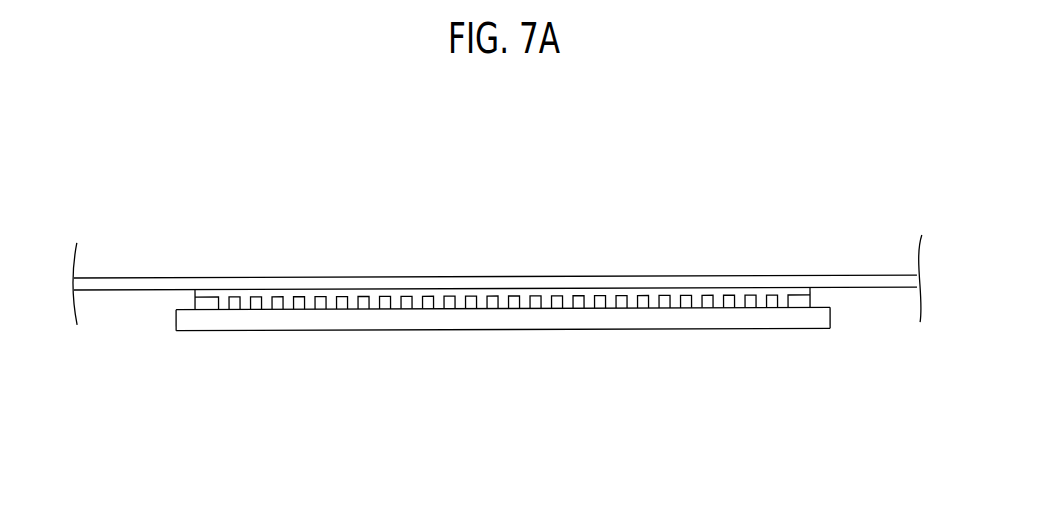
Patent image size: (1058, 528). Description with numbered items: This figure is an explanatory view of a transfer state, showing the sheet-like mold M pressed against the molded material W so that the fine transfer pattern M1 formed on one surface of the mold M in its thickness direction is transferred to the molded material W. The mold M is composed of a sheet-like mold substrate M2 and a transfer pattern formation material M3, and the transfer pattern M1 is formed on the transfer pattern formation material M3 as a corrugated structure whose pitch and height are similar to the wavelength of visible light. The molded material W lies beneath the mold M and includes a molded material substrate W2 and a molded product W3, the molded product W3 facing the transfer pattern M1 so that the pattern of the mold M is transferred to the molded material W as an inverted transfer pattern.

The sheet-like mold M is at (147, 279).
The transfer pattern M1 is at (537, 295).
The mold substrate M2 is at (333, 277).
The transfer pattern formation material M3 is at (410, 305).
The molded material W is at (275, 331).
The molded material substrate W2 is at (645, 318).
The molded product W3 is at (742, 307).